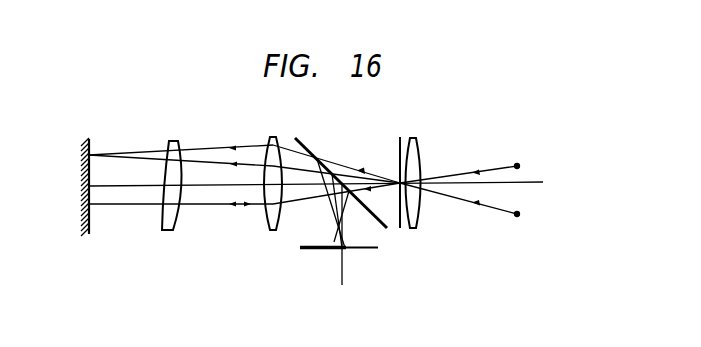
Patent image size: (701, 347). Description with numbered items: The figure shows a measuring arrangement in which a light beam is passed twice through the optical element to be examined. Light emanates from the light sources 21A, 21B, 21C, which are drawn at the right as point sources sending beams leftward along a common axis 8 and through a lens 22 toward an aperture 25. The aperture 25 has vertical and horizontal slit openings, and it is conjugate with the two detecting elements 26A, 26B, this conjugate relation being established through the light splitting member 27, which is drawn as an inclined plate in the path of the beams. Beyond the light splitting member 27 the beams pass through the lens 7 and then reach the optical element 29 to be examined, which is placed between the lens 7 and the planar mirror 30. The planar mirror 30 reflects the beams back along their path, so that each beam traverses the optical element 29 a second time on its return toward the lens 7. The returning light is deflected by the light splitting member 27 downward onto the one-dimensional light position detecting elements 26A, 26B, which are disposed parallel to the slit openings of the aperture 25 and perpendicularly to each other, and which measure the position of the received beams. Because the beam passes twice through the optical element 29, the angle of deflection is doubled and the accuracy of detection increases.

The planar mirror 30 is at (92, 148).
The optical element to be examined 29 is at (173, 142).
The lens 7 is at (273, 138).
The light splitting member 27 is at (299, 141).
The aperture 25 is at (400, 141).
The lens 22 is at (418, 150).
The optical axis 8 is at (539, 181).
The light source 21B is at (517, 166).
The light source 21C is at (517, 166).
The light source 21A is at (517, 215).
The one-dimensional light position detecting element 26A is at (303, 249).
The one-dimensional light position detecting element 26B is at (349, 249).